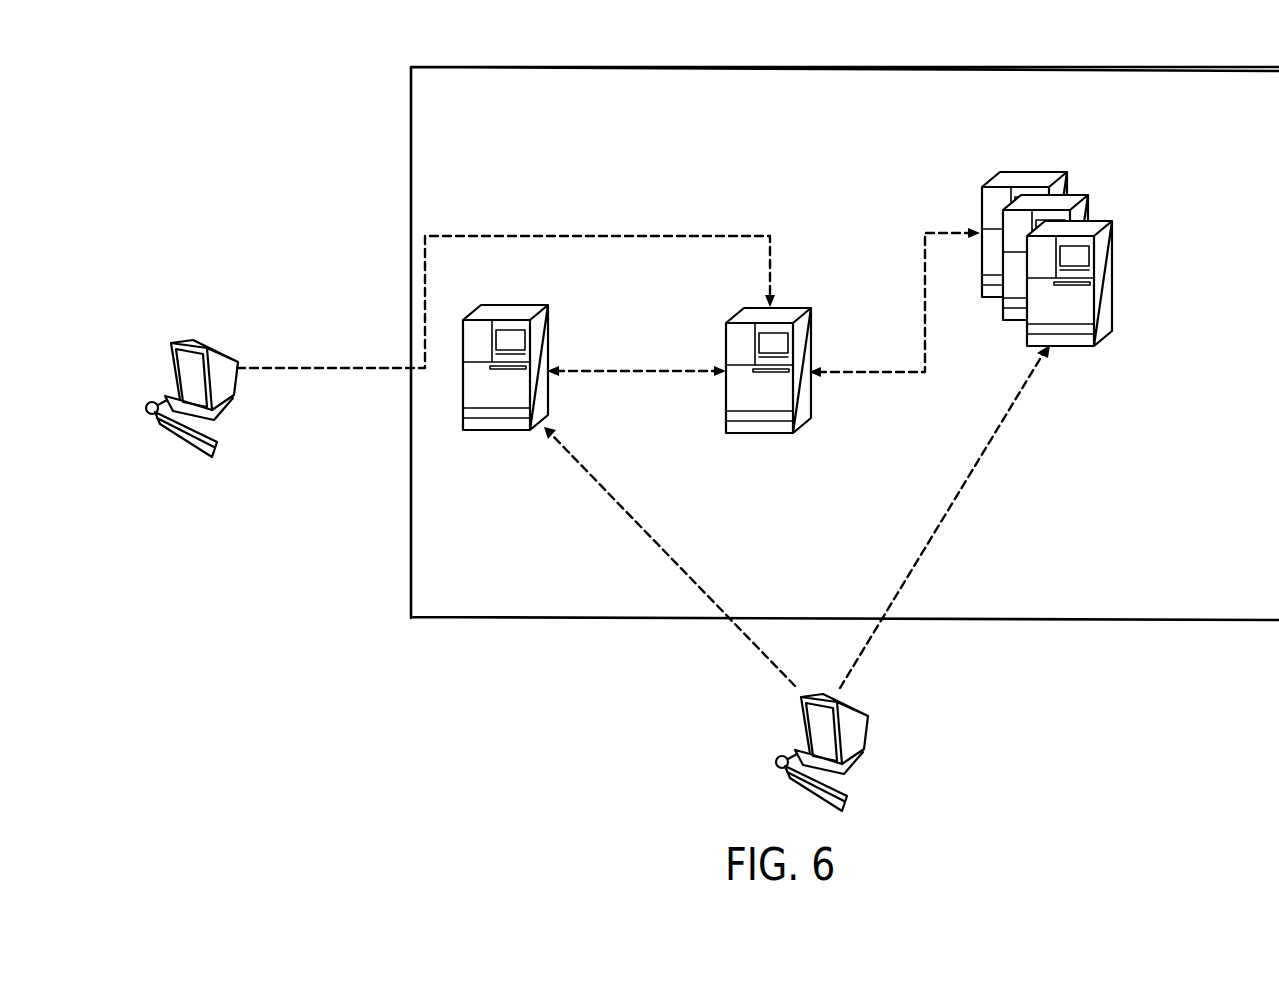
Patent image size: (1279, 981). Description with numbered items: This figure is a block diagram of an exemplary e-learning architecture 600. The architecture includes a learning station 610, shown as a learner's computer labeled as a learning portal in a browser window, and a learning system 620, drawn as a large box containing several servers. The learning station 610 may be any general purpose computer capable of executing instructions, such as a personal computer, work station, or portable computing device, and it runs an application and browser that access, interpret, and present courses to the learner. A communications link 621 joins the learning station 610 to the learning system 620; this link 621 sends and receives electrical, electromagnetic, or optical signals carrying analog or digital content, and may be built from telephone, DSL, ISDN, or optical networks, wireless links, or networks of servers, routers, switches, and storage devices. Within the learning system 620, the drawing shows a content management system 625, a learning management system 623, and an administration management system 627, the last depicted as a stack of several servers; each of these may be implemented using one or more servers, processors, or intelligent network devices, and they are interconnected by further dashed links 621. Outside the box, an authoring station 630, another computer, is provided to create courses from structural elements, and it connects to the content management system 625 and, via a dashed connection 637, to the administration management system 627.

The e-learning architecture 600 is at (346, 677).
The learning station 610 is at (232, 395).
The learning system 620 is at (775, 68).
The communications link 621 is at (340, 356).
The learning management system 623 is at (811, 332).
The content management system 625 is at (548, 325).
The administration management system 627 is at (1112, 292).
The authoring station 630 is at (863, 738).
The communication link 637 is at (1010, 420).